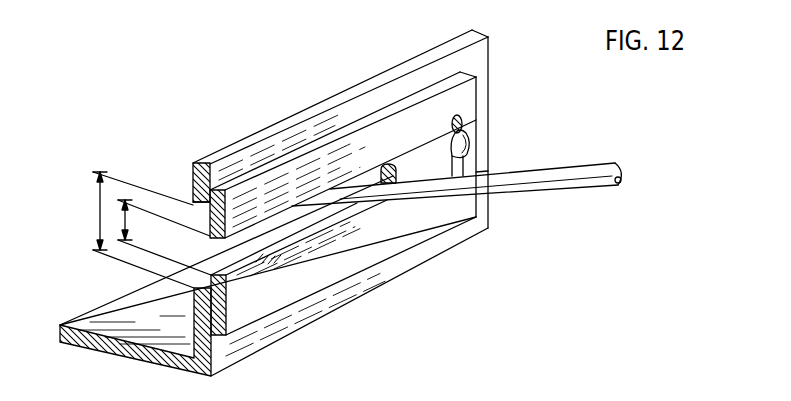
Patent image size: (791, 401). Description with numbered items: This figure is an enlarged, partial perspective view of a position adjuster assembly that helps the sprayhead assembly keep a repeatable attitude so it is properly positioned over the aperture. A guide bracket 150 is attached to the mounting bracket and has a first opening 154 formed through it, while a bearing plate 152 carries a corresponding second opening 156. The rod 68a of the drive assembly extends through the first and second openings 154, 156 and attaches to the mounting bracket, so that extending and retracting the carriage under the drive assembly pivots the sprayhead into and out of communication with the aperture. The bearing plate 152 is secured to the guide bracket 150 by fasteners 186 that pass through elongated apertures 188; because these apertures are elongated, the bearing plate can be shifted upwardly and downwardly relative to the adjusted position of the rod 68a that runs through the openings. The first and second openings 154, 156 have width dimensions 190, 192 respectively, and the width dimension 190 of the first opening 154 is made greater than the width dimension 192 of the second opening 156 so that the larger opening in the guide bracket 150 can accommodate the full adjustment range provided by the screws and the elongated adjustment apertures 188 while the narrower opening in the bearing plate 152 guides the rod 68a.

The guide bracket 150 is at (477, 56).
The bearing plate 152 is at (462, 98).
The first opening 154 is at (200, 209).
The second opening 156 is at (332, 225).
The fasteners 186 is at (470, 140).
The elongated apertures 188 is at (490, 165).
The rod 68a is at (580, 170).
The width dimension of first opening 190 is at (100, 214).
The width dimension of second opening 192 is at (134, 197).